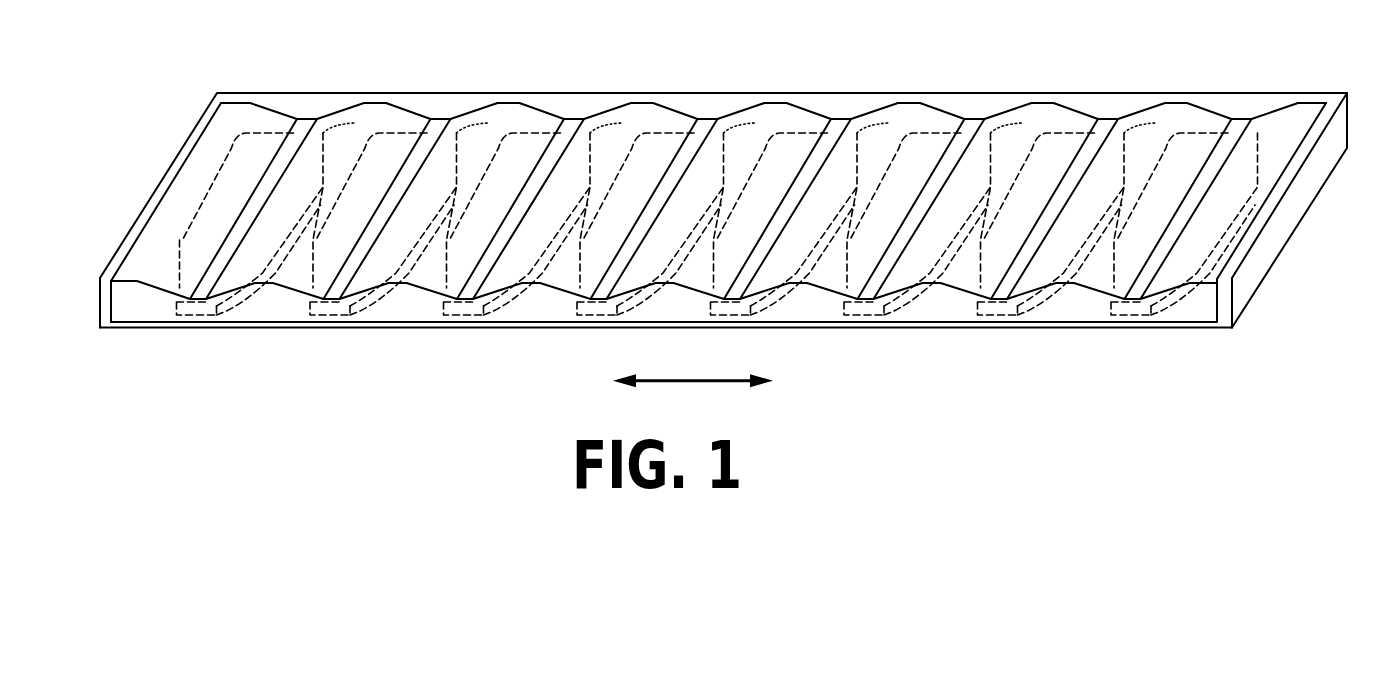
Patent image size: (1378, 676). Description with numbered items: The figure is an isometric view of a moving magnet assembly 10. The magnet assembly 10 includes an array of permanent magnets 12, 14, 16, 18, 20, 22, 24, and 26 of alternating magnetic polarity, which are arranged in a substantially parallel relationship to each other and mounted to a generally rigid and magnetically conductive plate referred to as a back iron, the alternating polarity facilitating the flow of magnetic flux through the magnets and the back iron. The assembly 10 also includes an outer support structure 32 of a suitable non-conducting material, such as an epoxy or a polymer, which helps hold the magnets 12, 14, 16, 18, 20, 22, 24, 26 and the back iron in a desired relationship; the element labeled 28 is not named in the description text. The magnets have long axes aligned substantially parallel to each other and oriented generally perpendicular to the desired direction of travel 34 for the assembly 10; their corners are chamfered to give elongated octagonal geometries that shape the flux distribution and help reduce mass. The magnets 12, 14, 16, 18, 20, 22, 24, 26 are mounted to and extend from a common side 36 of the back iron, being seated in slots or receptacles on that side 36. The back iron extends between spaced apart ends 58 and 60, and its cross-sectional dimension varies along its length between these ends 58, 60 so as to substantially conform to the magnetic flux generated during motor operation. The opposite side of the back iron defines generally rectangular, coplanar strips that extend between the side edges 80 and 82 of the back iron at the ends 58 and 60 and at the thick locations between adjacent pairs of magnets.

The magnet assembly 10 is at (1122, 52).
The permanent magnet 12 is at (383, 215).
The permanent magnet 14 is at (517, 215).
The permanent magnet 16 is at (650, 215).
The permanent magnet 18 is at (784, 215).
The permanent magnet 20 is at (917, 217).
The permanent magnet 22 is at (1051, 214).
The permanent magnet 24 is at (1184, 214).
The permanent magnet 26 is at (1257, 142).
The ridge peak 28 is at (348, 108).
The outer support structure 32 is at (692, 88).
The direction of travel 34 is at (687, 381).
The common side of the back iron 36 is at (958, 322).
The end of the back iron 58 is at (108, 300).
The end of the back iron 60 is at (1272, 238).
The side edge of the back iron 80 is at (1177, 328).
The side edge of the back iron 82 is at (1213, 108).